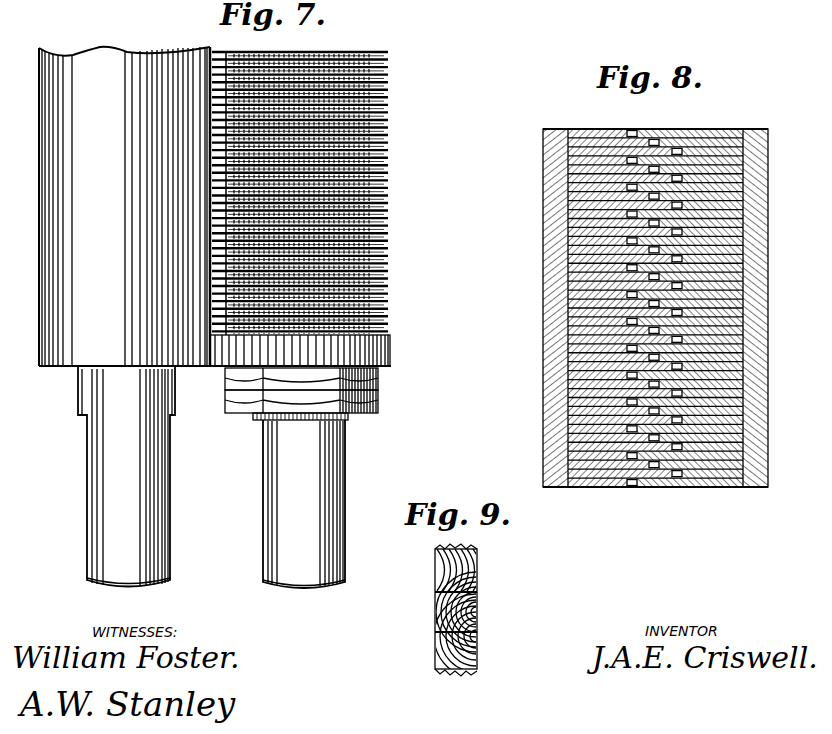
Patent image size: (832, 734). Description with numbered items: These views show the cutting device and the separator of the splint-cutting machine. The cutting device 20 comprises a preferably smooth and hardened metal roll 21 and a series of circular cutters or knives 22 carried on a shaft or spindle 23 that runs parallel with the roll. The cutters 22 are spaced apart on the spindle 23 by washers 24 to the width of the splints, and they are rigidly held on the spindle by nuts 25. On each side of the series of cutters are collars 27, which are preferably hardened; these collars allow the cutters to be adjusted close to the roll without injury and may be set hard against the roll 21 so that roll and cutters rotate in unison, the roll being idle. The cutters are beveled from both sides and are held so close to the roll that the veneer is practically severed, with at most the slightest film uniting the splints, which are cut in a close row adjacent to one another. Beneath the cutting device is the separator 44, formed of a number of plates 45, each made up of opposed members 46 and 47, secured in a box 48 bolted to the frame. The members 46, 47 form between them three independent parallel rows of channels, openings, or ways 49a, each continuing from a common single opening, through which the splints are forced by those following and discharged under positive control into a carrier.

In FIG. 7, the cutting device 20 is at (146, 477).
In FIG. 7, the metal roll 21 is at (72, 356).
In FIG. 7, the cutters or knives 22 is at (387, 68).
In FIG. 7, the shaft or spindle 23 is at (338, 483).
In FIG. 7, the washers 24 is at (380, 222).
In FIG. 7, the nuts 25 is at (370, 414).
In FIG. 7, the collars 27 is at (385, 349).
In FIG. 8, the separator 44 is at (647, 497).
In FIG. 8, the plates 45 is at (730, 480).
In FIG. 8, the opposed member 46 is at (572, 422).
In FIG. 8, the opposed member 47 is at (729, 136).
In FIG. 8, the box 48 is at (546, 265).
In FIG. 8, the channels, openings, or ways 49a is at (657, 122).